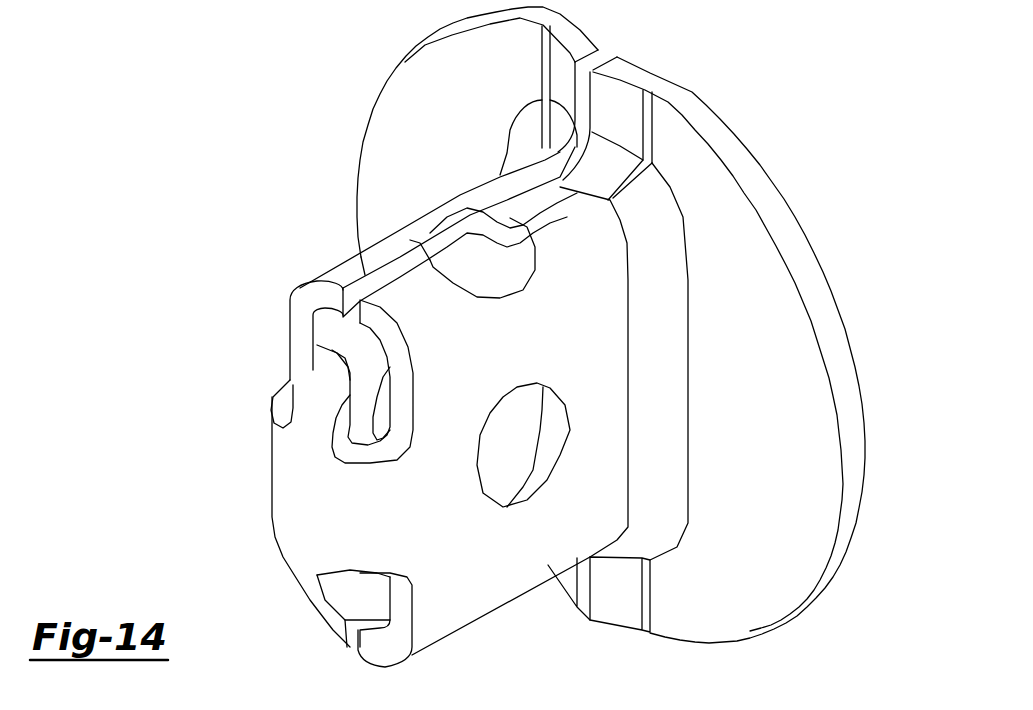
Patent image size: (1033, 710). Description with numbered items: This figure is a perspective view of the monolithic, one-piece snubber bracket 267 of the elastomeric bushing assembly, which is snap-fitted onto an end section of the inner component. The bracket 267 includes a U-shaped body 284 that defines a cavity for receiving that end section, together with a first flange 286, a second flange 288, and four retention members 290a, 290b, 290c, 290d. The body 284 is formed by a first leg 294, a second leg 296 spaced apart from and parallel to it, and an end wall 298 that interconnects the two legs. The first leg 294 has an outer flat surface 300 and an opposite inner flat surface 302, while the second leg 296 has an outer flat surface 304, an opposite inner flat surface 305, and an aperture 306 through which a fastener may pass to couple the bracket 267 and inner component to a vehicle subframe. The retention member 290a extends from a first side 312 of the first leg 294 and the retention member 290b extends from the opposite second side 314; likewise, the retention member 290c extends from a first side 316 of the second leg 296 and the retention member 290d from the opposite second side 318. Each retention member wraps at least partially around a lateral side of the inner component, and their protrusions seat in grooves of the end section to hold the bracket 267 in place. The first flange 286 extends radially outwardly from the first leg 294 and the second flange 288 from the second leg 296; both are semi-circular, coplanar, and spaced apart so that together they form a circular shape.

The bracket 267 is at (380, 84).
The body 284 is at (292, 285).
The first flange 286 is at (487, 53).
The second flange 288 is at (712, 177).
The retention member 290a is at (500, 183).
The retention member 290b is at (327, 623).
The retention member 290c is at (413, 313).
The retention member 290d is at (378, 650).
The first leg 294 is at (288, 353).
The second leg 296 is at (456, 591).
The end wall 298 is at (307, 500).
The outer flat surface 300 is at (287, 363).
The inner flat surface 302 is at (320, 362).
The outer flat surface 304 is at (577, 560).
The inner flat surface 305 is at (387, 603).
The aperture 306 is at (515, 443).
The first side 312 is at (290, 312).
The second side 314 is at (290, 580).
The first side 316 is at (575, 253).
The second side 318 is at (483, 600).